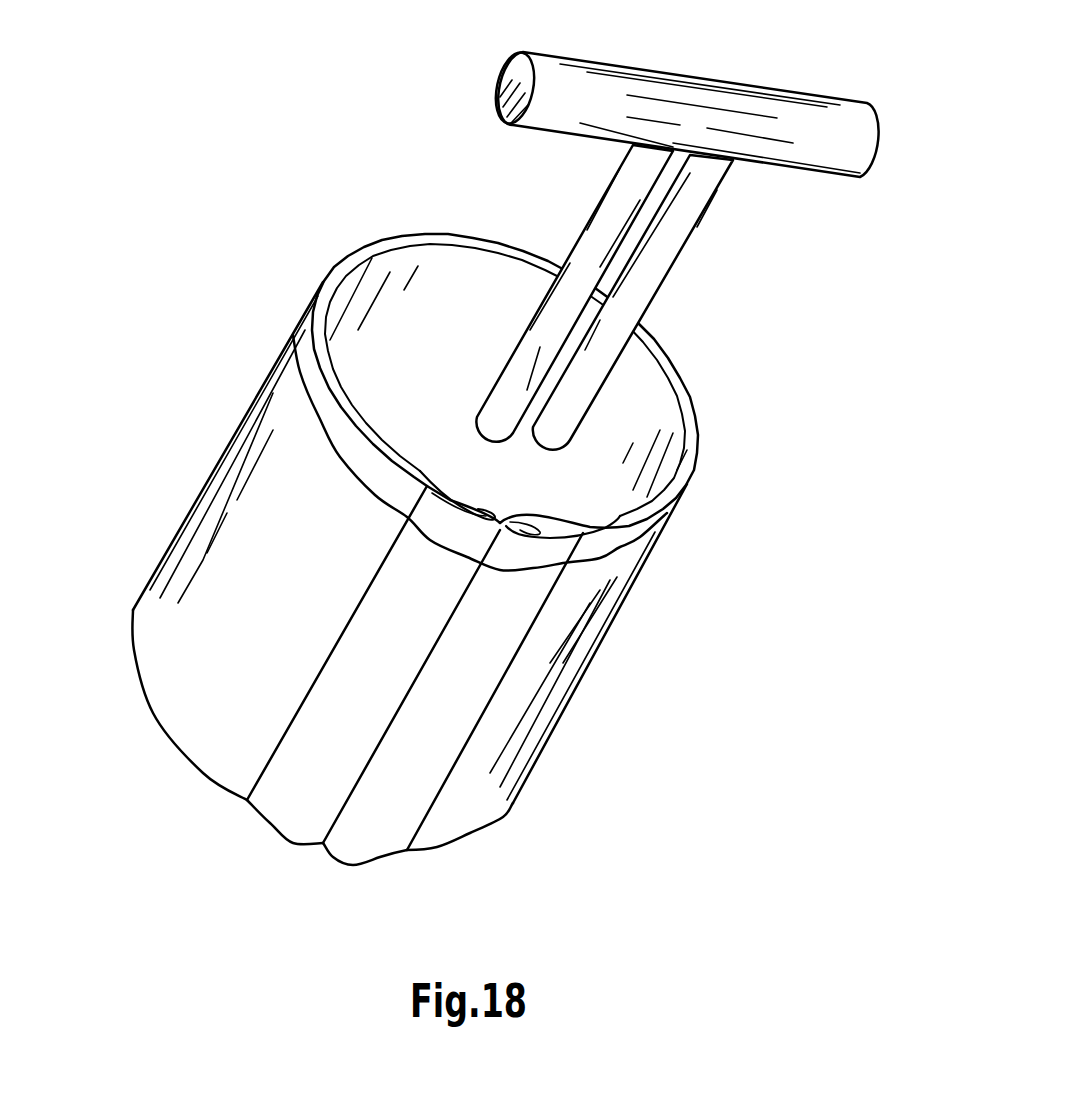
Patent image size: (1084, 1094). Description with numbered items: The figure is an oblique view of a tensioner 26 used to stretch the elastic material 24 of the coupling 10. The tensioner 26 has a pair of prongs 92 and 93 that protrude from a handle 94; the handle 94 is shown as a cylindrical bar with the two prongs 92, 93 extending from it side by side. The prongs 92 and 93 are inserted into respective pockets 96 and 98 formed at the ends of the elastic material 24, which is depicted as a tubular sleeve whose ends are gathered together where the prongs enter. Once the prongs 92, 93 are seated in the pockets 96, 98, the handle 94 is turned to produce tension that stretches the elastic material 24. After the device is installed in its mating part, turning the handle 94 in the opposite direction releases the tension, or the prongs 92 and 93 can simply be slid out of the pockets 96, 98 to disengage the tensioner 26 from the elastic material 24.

The coupling 10 is at (262, 245).
The elastic material 24 is at (195, 530).
The tensioner 26 is at (478, 50).
The prong 92 is at (530, 353).
The prong 93 is at (600, 353).
The handle 94 is at (800, 120).
The pocket 96 is at (480, 513).
The pocket 98 is at (527, 530).